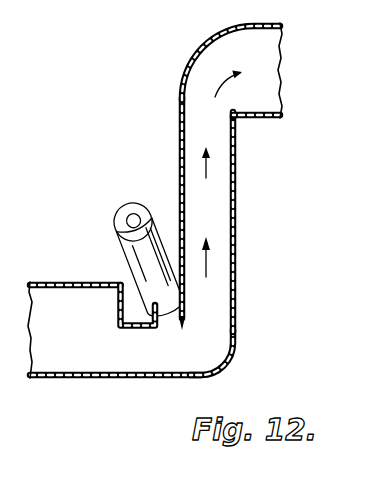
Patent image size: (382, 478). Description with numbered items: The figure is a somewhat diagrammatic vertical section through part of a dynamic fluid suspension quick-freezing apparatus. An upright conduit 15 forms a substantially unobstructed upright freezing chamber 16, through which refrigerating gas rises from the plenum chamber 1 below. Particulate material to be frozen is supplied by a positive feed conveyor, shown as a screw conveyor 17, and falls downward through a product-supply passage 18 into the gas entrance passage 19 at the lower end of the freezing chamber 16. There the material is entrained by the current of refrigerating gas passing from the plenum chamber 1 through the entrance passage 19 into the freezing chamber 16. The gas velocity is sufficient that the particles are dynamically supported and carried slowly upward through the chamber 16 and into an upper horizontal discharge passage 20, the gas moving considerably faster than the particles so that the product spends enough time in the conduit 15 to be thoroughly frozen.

The plenum chamber 1 is at (50, 293).
The upright conduit 15 is at (221, 268).
The freezing chamber 16 is at (221, 183).
The screw conveyor 17 is at (146, 208).
The product-supply passage 18 is at (165, 330).
The gas entrance passage 19 is at (189, 346).
The upper horizontal discharge passage 20 is at (266, 112).